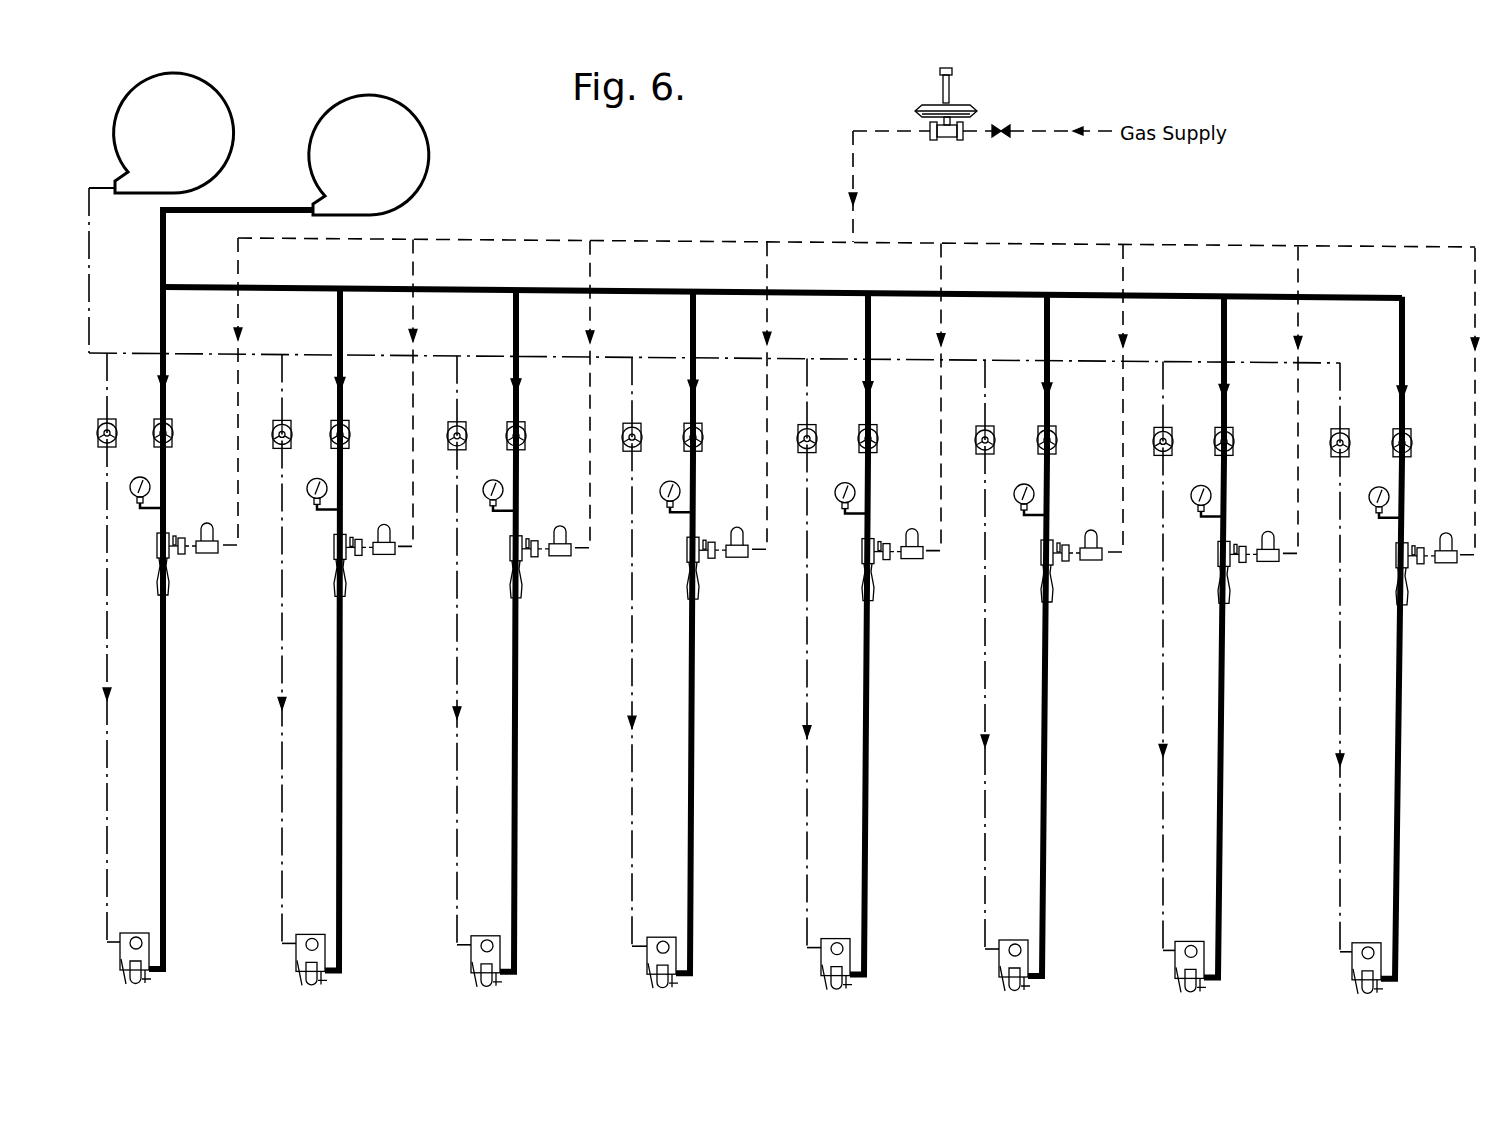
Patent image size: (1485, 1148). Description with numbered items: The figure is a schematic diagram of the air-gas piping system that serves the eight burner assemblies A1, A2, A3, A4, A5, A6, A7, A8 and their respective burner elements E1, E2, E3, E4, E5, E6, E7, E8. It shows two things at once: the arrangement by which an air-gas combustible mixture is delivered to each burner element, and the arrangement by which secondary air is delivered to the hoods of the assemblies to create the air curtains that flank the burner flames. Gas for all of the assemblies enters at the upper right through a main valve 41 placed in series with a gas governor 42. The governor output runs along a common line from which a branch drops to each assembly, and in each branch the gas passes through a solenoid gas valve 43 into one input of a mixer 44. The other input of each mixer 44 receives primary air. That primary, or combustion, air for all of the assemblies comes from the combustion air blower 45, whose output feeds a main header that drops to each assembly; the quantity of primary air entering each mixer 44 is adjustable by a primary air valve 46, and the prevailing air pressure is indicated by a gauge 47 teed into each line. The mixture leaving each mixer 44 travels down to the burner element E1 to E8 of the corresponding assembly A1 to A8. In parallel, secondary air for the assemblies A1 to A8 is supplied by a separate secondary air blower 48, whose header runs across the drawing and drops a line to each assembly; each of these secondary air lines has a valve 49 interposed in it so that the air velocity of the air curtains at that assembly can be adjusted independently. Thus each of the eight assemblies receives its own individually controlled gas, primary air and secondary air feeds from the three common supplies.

The main valve 41 is at (1000, 140).
The gas governor 42 is at (972, 110).
The solenoid gas valve 43 is at (840, 543).
The mixer 44 is at (806, 578).
The combustion air blower 45 is at (427, 153).
The primary air valve 46 is at (801, 431).
The gauge 47 is at (760, 501).
The secondary air blower 48 is at (215, 167).
The valve 49 is at (738, 423).
The assembly A1 is at (113, 961).
The assembly A2 is at (289, 962).
The assembly A3 is at (464, 964).
The assembly A4 is at (640, 965).
The assembly A5 is at (814, 967).
The assembly A6 is at (992, 968).
The assembly A7 is at (1168, 969).
The assembly A8 is at (1345, 971).
The burner element E1 is at (160, 977).
The burner element E2 is at (336, 978).
The burner element E3 is at (511, 980).
The burner element E4 is at (687, 981).
The burner element E5 is at (861, 983).
The burner element E6 is at (1039, 984).
The burner element E7 is at (1215, 985).
The burner element E8 is at (1392, 987).